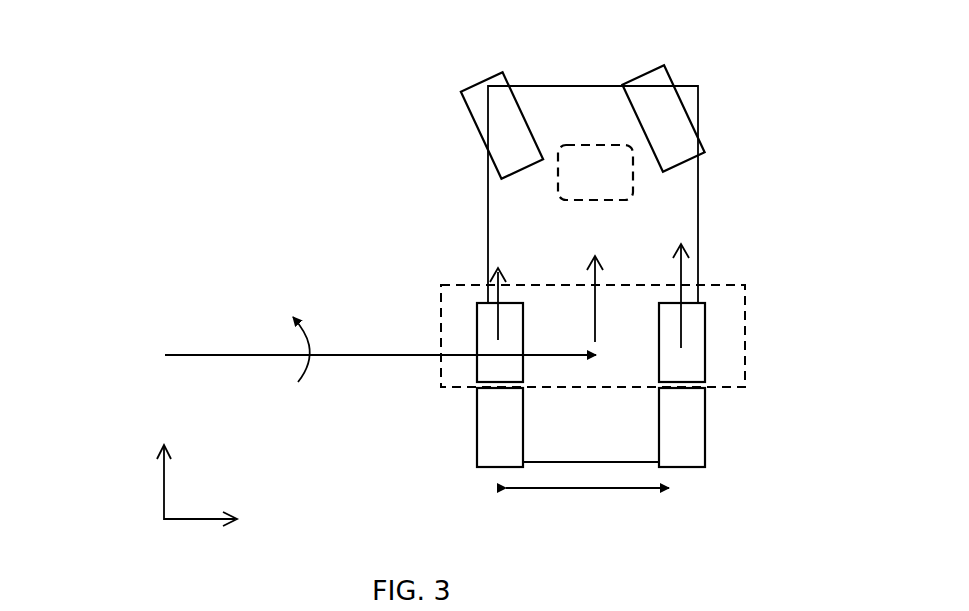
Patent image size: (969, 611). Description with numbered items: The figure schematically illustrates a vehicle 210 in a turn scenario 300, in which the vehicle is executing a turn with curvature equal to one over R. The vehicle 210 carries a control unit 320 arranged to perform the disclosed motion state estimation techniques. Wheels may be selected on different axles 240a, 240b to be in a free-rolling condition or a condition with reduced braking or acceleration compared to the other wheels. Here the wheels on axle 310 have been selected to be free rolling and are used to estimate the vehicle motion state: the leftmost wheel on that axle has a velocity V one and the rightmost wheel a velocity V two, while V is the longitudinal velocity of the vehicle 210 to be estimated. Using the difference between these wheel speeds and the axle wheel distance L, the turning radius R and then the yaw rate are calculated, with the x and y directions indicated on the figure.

The turn scenario 300 is at (157, 100).
The vehicle 210 is at (488, 203).
The axle 240a is at (665, 78).
The axle 240b is at (482, 447).
The control unit 320 is at (595, 172).
The axle 310 is at (747, 323).